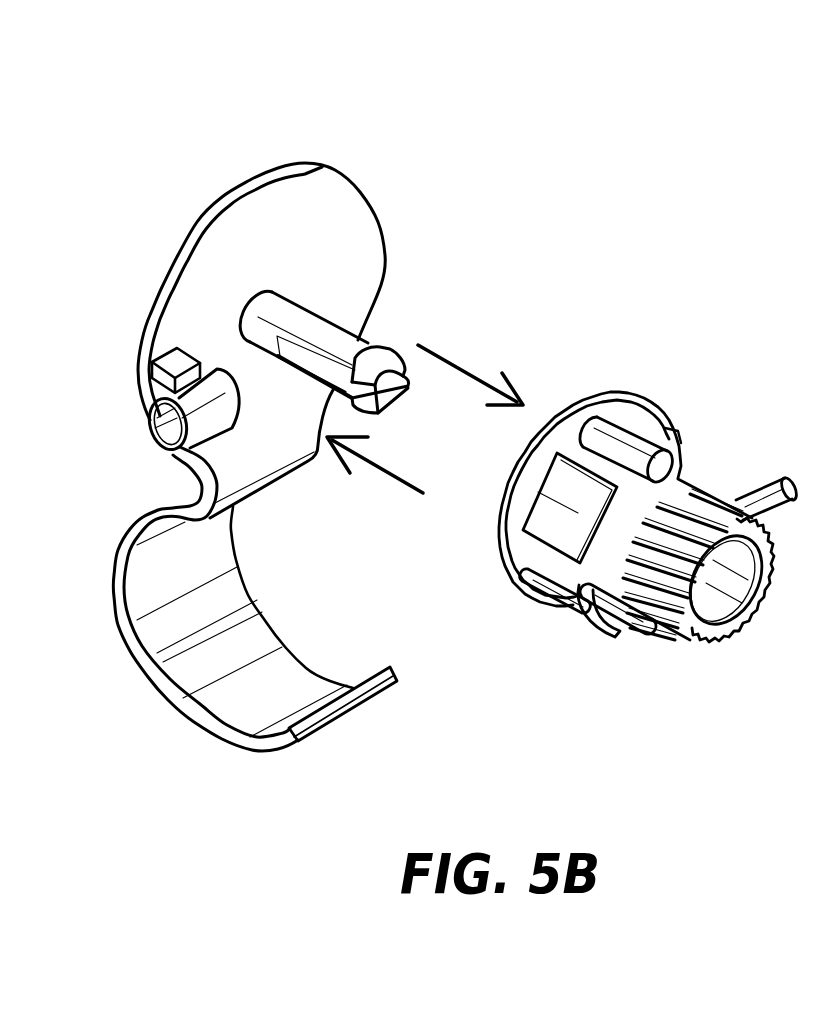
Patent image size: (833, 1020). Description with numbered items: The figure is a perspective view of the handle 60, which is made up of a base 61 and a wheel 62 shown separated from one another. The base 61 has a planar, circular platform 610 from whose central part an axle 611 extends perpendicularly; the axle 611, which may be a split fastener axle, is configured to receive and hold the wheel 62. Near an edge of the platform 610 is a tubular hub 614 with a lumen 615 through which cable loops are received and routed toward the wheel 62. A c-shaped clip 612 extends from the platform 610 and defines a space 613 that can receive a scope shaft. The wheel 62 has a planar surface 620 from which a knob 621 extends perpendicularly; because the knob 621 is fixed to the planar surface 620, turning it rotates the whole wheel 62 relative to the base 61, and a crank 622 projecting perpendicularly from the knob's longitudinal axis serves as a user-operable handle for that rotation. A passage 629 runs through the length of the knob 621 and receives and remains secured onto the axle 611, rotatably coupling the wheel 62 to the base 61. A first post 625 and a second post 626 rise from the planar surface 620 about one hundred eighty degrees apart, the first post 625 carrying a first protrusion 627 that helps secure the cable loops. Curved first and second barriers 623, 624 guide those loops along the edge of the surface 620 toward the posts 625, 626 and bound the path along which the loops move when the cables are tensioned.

The handle 60 is at (552, 170).
The base 61 is at (383, 150).
The platform 610 is at (248, 210).
The axle 611 is at (340, 331).
The clip 612 is at (162, 655).
The space 613 is at (280, 590).
The hub 614 is at (166, 392).
The lumen 615 is at (157, 420).
The wheel 62 is at (611, 366).
The planar surface 620 is at (570, 442).
The knob 621 is at (708, 507).
The crank 622 is at (782, 506).
The first barrier 623 is at (540, 503).
The second barrier 624 is at (570, 612).
The first post 625 is at (627, 433).
The second post 626 is at (623, 627).
The first protrusion 627 is at (675, 432).
The passage 629 is at (712, 569).